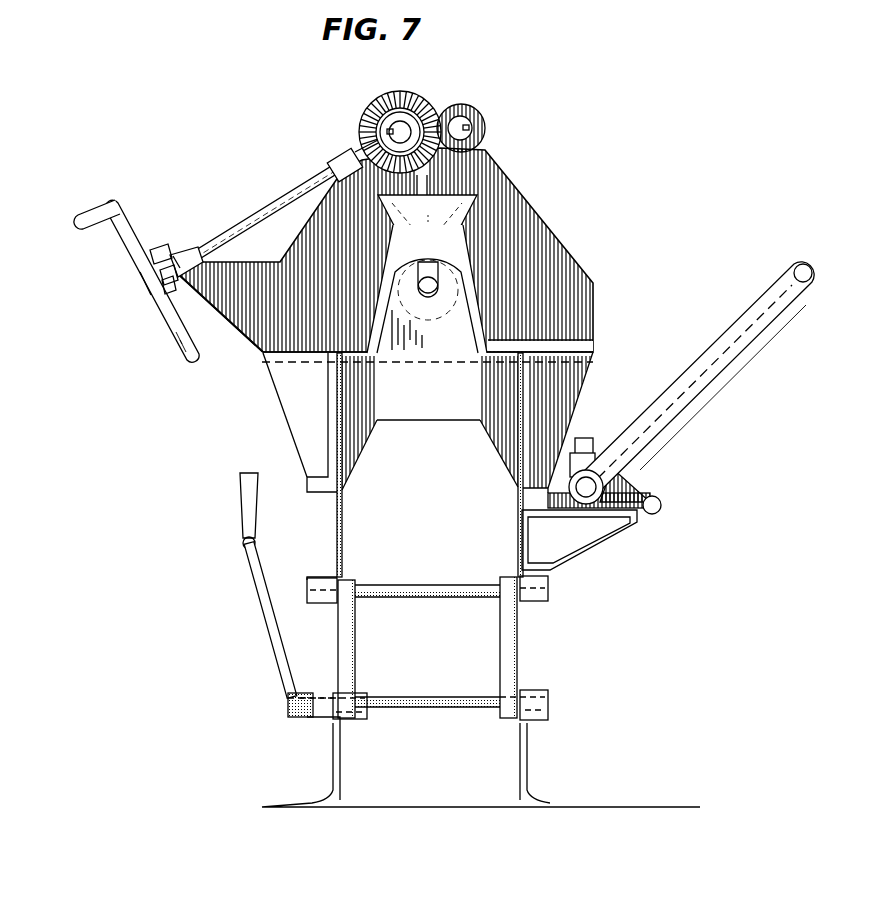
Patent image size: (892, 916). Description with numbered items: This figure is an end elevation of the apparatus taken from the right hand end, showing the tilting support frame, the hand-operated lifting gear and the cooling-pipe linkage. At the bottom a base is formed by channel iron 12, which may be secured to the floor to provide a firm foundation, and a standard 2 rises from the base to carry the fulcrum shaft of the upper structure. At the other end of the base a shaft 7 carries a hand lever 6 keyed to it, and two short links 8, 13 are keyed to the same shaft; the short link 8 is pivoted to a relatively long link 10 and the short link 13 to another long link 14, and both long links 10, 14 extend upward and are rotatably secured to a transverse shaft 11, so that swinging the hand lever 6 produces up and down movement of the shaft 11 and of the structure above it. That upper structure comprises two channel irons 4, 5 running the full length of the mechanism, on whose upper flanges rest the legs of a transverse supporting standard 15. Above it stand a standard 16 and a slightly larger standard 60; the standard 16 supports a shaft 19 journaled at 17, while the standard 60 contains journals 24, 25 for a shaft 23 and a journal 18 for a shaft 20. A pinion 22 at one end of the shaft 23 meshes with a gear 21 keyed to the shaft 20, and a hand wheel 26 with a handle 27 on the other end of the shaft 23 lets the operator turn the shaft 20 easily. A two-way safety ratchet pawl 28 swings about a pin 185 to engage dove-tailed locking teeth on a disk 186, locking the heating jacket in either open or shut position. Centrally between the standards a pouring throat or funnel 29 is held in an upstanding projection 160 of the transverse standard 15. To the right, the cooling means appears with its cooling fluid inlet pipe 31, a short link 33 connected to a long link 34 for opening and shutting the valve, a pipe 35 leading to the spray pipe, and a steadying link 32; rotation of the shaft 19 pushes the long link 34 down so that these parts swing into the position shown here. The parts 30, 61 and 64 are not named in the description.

The standard 2 is at (333, 770).
The channel iron 4 is at (332, 524).
The channel iron 5 is at (516, 510).
The hand lever 6 is at (257, 582).
The shaft 7 is at (418, 700).
The short link 8 is at (370, 720).
The long link 10 is at (356, 642).
The transverse shaft 11 is at (408, 590).
The channel iron 12 is at (530, 770).
The short link 13 is at (494, 718).
The long link 14 is at (519, 655).
The transverse supporting standard 15 is at (447, 406).
The standard 16 is at (590, 320).
The journal 17 is at (484, 138).
The journal 18 is at (362, 126).
The shaft 19 is at (470, 126).
The shaft 20 is at (406, 126).
The gear 21 is at (385, 102).
The pinion 22 is at (360, 137).
The shaft 23 is at (270, 212).
The journal 24 is at (328, 170).
The journal 25 is at (190, 252).
The hand wheel 26 is at (168, 322).
The handle 27 is at (88, 214).
The pawl 28 is at (156, 250).
The pouring throat or funnel 29 is at (427, 227).
The support bracket 30 is at (625, 530).
The cooling fluid inlet pipe 31 is at (598, 432).
The link 32 is at (662, 428).
The short link 33 is at (662, 503).
The long link 34 is at (583, 390).
The pipe 35 is at (780, 300).
The standard 60 is at (258, 352).
The rib 61 is at (596, 345).
The lower casting 64 is at (292, 340).
The upstanding projection 160 is at (427, 289).
The pin 185 is at (173, 256).
The disk 186 is at (174, 286).